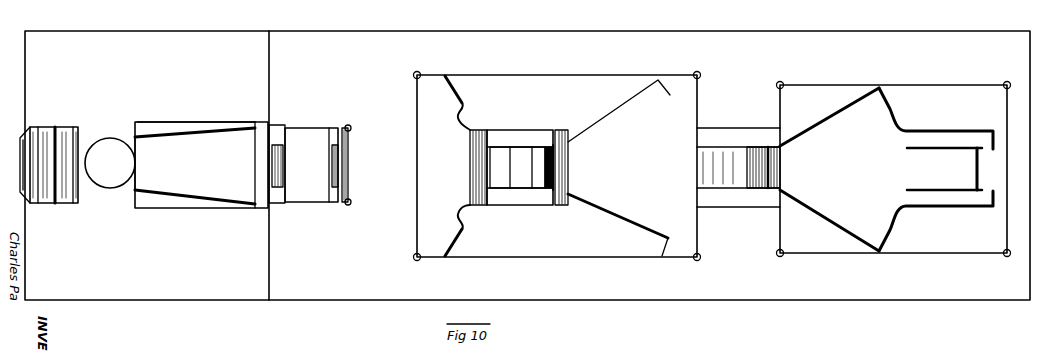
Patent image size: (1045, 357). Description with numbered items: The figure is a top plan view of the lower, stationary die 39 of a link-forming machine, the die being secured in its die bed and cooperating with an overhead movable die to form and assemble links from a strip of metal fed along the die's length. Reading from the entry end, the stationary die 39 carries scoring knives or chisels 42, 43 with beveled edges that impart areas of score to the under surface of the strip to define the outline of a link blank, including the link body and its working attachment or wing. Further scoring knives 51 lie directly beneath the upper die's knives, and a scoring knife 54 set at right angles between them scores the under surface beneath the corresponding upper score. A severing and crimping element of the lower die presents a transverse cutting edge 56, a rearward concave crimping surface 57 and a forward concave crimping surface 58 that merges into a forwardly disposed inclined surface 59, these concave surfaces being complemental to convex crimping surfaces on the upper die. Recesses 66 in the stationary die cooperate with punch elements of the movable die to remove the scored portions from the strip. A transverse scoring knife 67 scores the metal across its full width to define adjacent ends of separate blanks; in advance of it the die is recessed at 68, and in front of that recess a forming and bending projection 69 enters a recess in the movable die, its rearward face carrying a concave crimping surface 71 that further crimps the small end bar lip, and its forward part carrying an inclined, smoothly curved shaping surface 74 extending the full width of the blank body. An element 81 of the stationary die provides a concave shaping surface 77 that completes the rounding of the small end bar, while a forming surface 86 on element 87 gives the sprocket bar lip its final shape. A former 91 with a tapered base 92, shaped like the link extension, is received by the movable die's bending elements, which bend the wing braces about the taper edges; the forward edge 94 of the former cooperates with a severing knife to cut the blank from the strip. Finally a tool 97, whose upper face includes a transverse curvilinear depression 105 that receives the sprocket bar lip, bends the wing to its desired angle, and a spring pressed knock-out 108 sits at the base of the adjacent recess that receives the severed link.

The stationary die 39 is at (337, 290).
The scoring knife or chisel 42 is at (936, 169).
The scoring knife or chisel 43 is at (894, 169).
The scoring knife or chisel 51 is at (938, 150).
The scoring knife or chisel 54 is at (976, 178).
The transverse cutting edge 56 is at (768, 148).
The rearward concave crimping surface 57 is at (775, 168).
The forward concave crimping surface 58 is at (754, 183).
The inclined surface 59 is at (738, 175).
The recess 66 is at (557, 167).
The transverse scoring knife or chisel 67 is at (569, 178).
The recess 68 is at (560, 161).
The forming and bending projection 69 is at (520, 154).
The concave crimping surface 71 is at (557, 190).
The shaping surface 74 is at (492, 178).
The concave shaping surface 77 is at (346, 179).
The element of the stationary die 81 is at (340, 127).
The forming surface 86 is at (276, 166).
The element of the stationary die 87 is at (284, 176).
The former 91 is at (196, 112).
The base of the former 92 is at (201, 165).
The forward edge of the former 94 is at (133, 142).
The tool of the stationary die 97 is at (70, 203).
The transverse curvilinear depression 105 is at (43, 147).
The spring pressed knock-out 108 is at (107, 182).